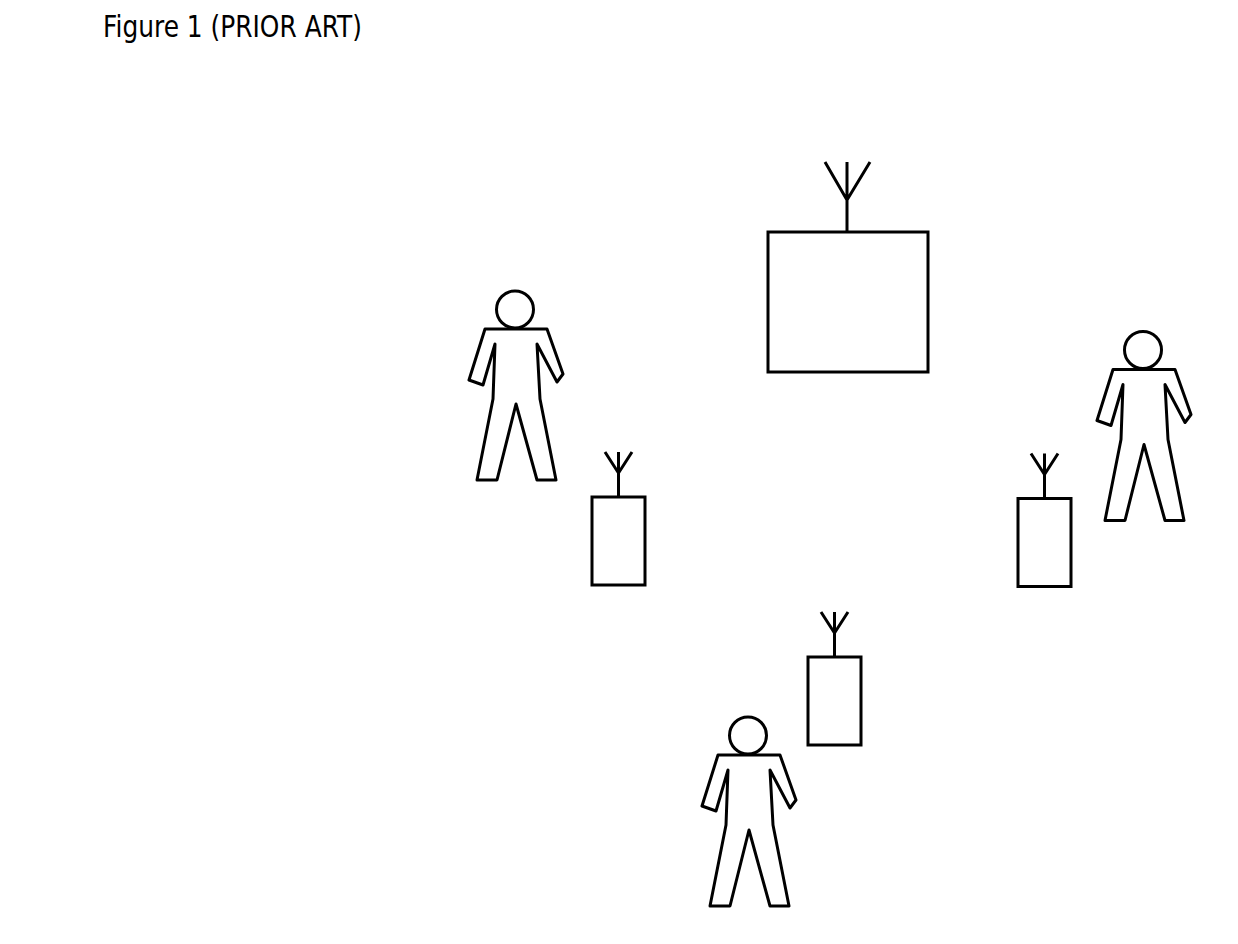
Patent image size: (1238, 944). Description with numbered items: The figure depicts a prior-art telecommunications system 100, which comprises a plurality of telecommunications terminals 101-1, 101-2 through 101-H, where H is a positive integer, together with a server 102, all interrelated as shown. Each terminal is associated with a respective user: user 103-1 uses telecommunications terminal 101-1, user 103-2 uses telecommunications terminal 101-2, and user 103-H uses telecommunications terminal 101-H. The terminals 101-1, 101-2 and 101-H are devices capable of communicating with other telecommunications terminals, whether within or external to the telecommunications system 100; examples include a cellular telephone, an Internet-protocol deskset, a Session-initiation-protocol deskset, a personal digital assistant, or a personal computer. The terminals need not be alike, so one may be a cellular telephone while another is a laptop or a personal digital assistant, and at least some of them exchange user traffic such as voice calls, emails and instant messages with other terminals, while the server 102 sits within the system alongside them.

The telecommunications system 100 is at (620, 121).
The telecommunications terminal 101-1 is at (592, 538).
The telecommunications terminal 101-2 is at (808, 697).
The telecommunications terminal 101-H is at (1018, 540).
The server 102 is at (768, 297).
The user 103-1 is at (483, 343).
The user 103-2 is at (717, 770).
The user 103-H is at (1110, 382).